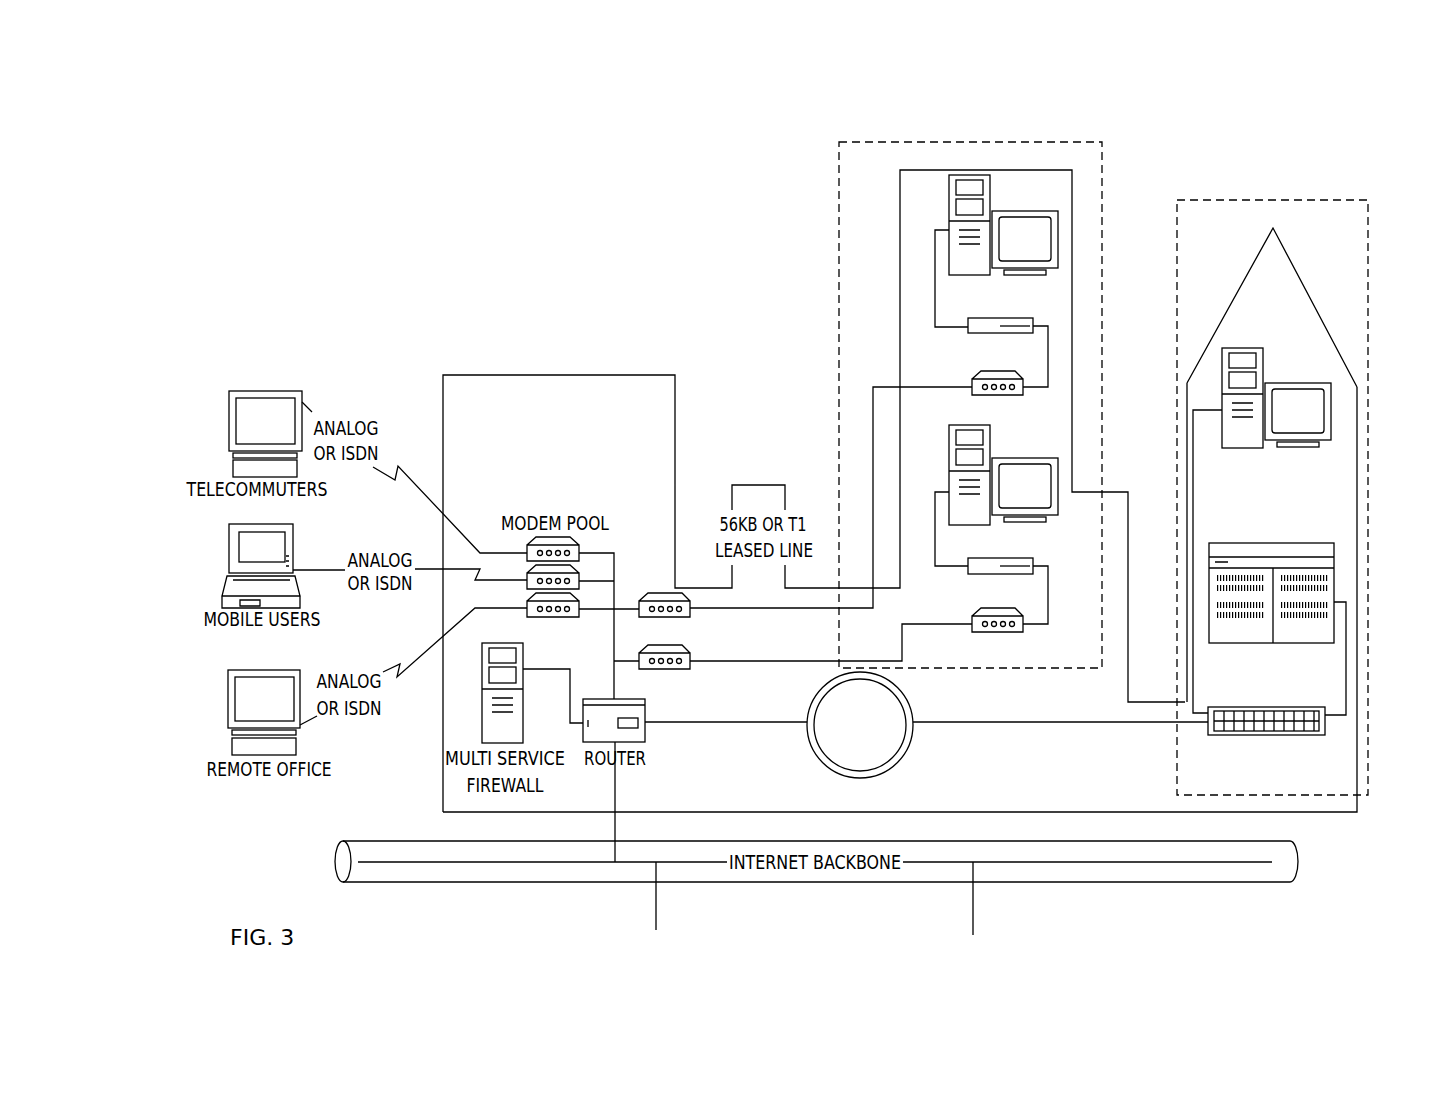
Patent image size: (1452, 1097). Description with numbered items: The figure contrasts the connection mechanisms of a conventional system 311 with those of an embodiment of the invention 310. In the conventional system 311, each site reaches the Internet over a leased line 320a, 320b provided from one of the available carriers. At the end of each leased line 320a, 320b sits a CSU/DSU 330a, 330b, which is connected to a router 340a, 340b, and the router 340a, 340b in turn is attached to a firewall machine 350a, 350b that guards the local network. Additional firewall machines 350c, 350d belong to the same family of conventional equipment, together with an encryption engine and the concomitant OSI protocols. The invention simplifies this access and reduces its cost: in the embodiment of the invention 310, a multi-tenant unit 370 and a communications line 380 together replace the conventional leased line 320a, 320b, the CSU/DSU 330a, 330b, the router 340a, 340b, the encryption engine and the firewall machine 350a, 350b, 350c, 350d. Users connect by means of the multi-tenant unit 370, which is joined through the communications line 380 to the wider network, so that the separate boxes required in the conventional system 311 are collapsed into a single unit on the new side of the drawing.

The conventional system 311 is at (1102, 150).
The embodiment of the invention 310 is at (1283, 200).
The leased line 320a is at (785, 607).
The leased line 320b is at (785, 660).
The CSU/DSU 330a is at (972, 377).
The CSU/DSU 330b is at (1023, 628).
The router 340a is at (1033, 322).
The router 340b is at (1033, 565).
The firewall machine 350a is at (949, 215).
The firewall machine 350b is at (949, 473).
The firewall machine 350c is at (1330, 397).
The firewall machine 350d is at (1334, 562).
The multi-tenant unit 370 is at (1325, 722).
The communications line 380 is at (1128, 724).